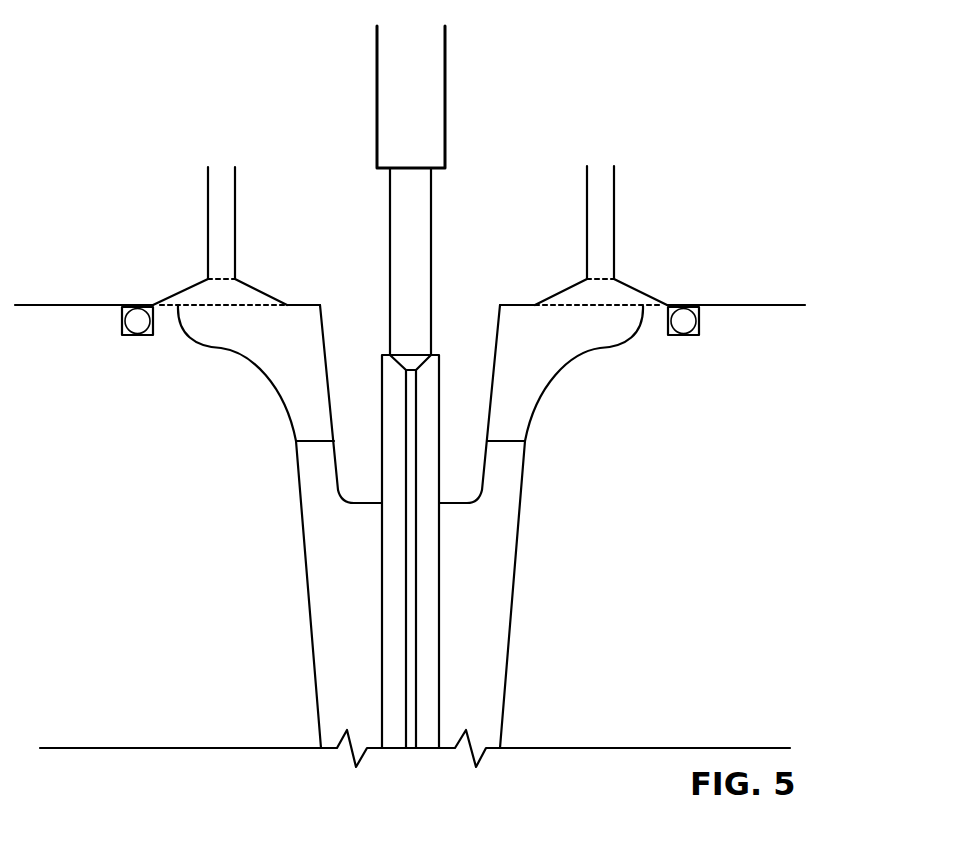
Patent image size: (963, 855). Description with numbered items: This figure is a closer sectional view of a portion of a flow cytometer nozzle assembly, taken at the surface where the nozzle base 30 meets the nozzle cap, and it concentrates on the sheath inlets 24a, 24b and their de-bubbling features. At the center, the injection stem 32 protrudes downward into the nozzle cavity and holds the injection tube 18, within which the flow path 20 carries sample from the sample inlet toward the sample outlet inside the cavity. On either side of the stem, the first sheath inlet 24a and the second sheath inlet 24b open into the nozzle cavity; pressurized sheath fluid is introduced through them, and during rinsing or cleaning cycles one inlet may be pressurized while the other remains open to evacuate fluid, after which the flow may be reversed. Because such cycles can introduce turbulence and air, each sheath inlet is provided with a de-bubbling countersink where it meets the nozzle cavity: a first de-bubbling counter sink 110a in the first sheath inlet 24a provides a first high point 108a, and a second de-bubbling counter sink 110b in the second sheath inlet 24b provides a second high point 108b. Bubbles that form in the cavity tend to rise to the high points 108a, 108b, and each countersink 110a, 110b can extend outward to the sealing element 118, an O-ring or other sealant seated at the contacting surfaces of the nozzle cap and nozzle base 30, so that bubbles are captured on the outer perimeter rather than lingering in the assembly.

The injection tube 18 is at (427, 639).
The injection stem 32 is at (470, 385).
The flow path 20 is at (410, 263).
The nozzle base 30 is at (415, 690).
The first sheath inlet 24a is at (223, 191).
The second sheath inlet 24b is at (602, 207).
The first high point 108a is at (222, 278).
The second high point 108b is at (595, 278).
The first de-bubbling counter sink 110a is at (243, 305).
The second de-bubbling counter sink 110b is at (628, 305).
The sealing element 118 is at (137, 322).